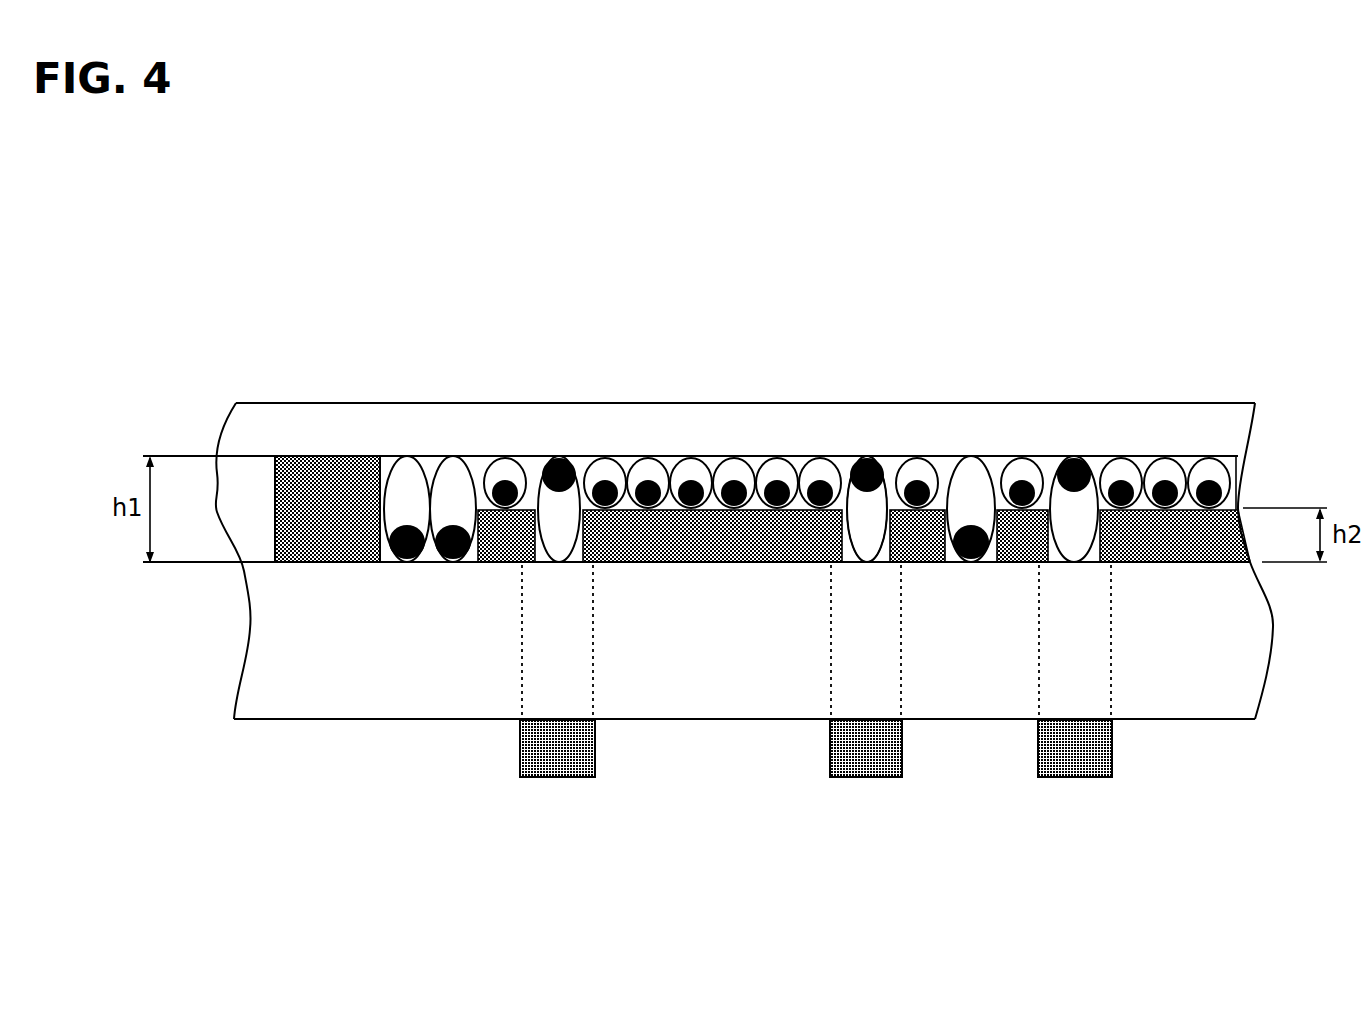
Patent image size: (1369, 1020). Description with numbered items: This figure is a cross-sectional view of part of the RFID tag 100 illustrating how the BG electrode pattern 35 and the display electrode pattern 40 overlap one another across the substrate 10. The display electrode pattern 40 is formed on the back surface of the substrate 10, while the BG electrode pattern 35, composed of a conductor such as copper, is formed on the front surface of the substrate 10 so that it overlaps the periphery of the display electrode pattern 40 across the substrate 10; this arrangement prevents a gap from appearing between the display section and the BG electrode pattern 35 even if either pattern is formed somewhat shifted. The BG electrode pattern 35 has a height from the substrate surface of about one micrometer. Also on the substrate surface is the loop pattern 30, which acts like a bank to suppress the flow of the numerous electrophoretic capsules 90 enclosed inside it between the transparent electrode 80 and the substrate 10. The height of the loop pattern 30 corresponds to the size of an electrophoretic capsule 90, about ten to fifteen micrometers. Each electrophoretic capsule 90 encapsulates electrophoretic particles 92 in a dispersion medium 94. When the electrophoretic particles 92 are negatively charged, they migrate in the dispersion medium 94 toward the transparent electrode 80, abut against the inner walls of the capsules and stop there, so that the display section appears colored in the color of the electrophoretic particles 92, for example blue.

The RFID tag 100 is at (248, 333).
The substrate 10 is at (1192, 690).
The loop pattern 30 is at (330, 481).
The BG electrode pattern 35 is at (506, 566).
The display electrode pattern 40 is at (558, 778).
The transparent electrode 80 is at (1095, 428).
The electrophoretic capsule 90 is at (452, 447).
The electrophoretic particle 92 is at (890, 464).
The dispersion medium 94 is at (866, 563).